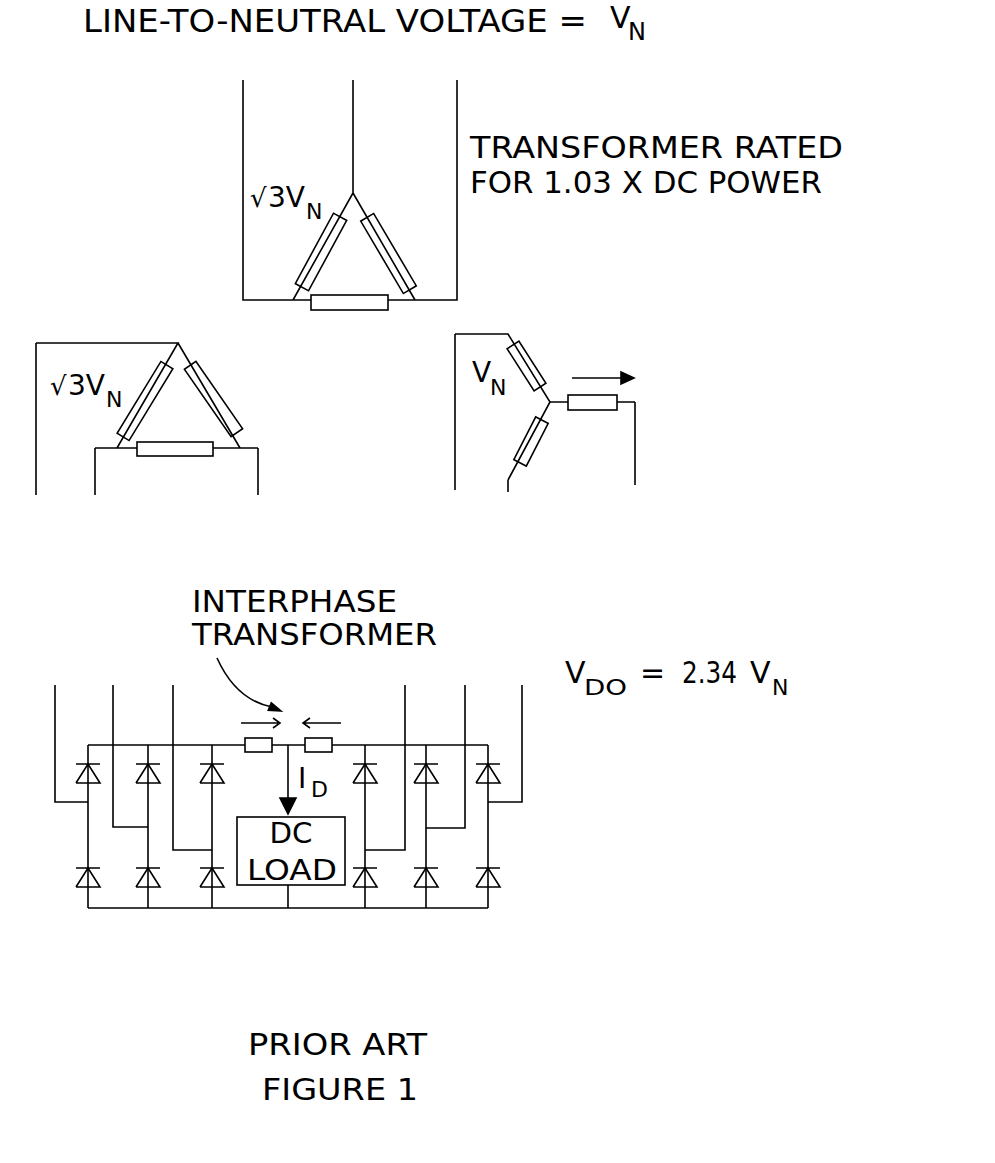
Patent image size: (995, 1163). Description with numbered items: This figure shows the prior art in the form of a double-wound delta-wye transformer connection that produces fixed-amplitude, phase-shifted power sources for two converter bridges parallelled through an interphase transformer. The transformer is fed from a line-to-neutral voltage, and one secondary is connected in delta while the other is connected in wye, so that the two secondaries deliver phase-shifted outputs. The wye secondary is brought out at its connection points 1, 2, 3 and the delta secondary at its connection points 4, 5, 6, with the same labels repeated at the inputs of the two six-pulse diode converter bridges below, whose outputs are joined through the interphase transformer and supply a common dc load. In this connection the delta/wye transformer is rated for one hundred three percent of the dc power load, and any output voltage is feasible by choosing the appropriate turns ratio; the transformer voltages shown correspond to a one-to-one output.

The transformer secondary terminal 1 is at (567, 602).
The transformer secondary terminal 2 is at (473, 654).
The transformer secondary terminal 3 is at (414, 592).
The transformer secondary terminal 4 is at (220, 649).
The transformer secondary terminal 5 is at (121, 637).
The transformer secondary terminal 6 is at (58, 572).